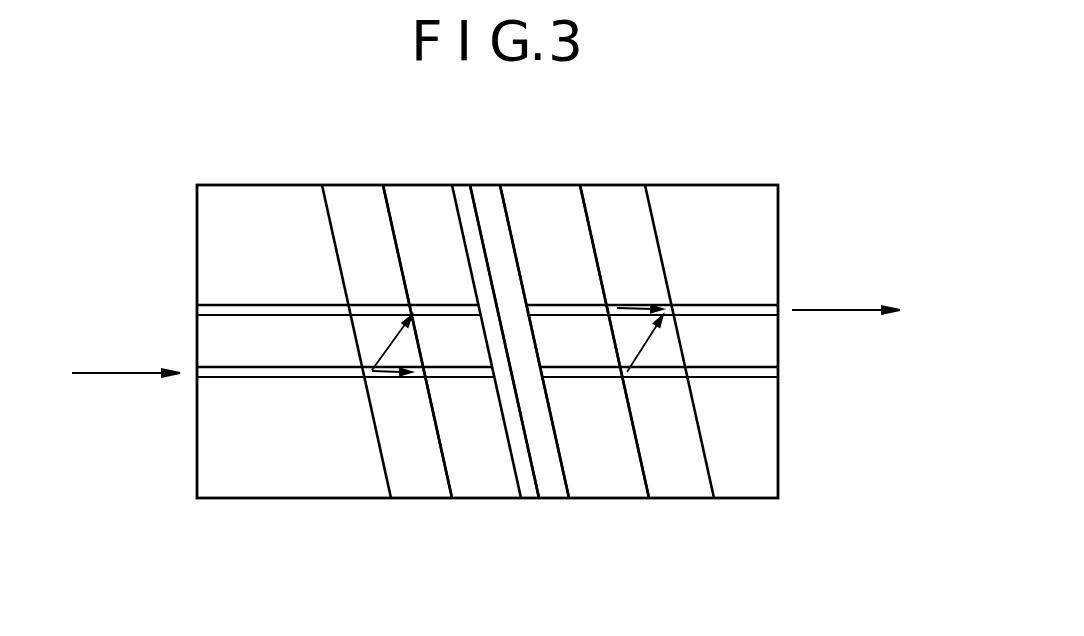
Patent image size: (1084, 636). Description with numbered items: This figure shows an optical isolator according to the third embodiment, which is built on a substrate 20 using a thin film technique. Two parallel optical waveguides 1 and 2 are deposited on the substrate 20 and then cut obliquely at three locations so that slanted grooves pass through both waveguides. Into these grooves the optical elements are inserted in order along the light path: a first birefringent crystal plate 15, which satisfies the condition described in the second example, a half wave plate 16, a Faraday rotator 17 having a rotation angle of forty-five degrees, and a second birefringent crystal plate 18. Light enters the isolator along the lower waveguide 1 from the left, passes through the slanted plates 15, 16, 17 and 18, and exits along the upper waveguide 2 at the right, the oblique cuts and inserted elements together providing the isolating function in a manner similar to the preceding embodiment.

The optical waveguide 1 is at (748, 382).
The optical waveguide 2 is at (748, 300).
The first birefringent crystal plate 15 is at (348, 184).
The half wave plate 16 is at (462, 184).
The Faraday rotator 17 is at (490, 187).
The second birefringent crystal plate 18 is at (617, 184).
The substrate body 20 is at (752, 487).